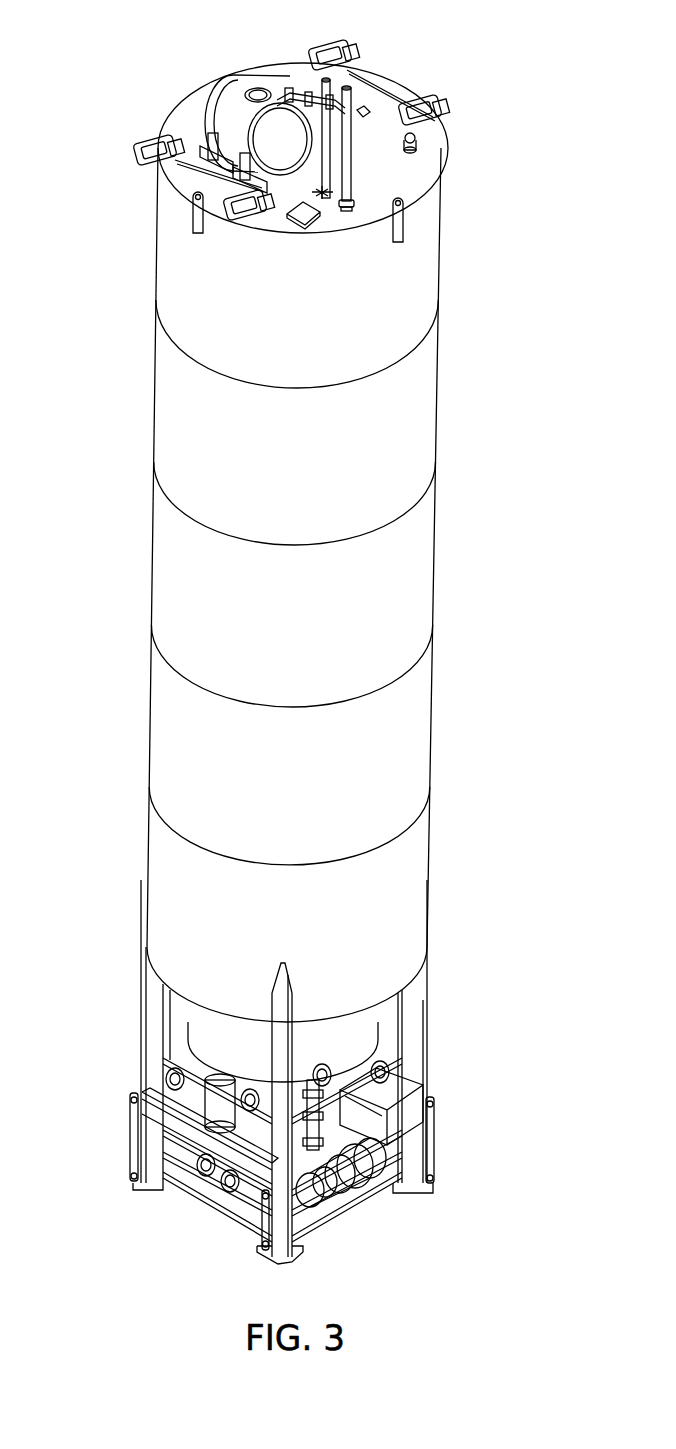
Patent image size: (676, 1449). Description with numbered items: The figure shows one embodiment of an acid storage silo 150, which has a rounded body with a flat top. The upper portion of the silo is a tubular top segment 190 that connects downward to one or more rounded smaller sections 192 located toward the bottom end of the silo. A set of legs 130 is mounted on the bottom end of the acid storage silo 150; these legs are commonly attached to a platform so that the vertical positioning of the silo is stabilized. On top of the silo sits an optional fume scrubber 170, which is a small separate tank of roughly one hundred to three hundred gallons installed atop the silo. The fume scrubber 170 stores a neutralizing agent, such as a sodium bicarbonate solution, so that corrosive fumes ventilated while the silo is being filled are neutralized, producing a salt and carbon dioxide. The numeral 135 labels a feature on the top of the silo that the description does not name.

The legs 130 is at (428, 1020).
The top plate 135 is at (286, 125).
The acid storage silo 150 is at (440, 370).
The fume scrubber 170 is at (236, 83).
The tubular top segment 190 is at (295, 636).
The rounded smaller sections 192 is at (192, 1020).